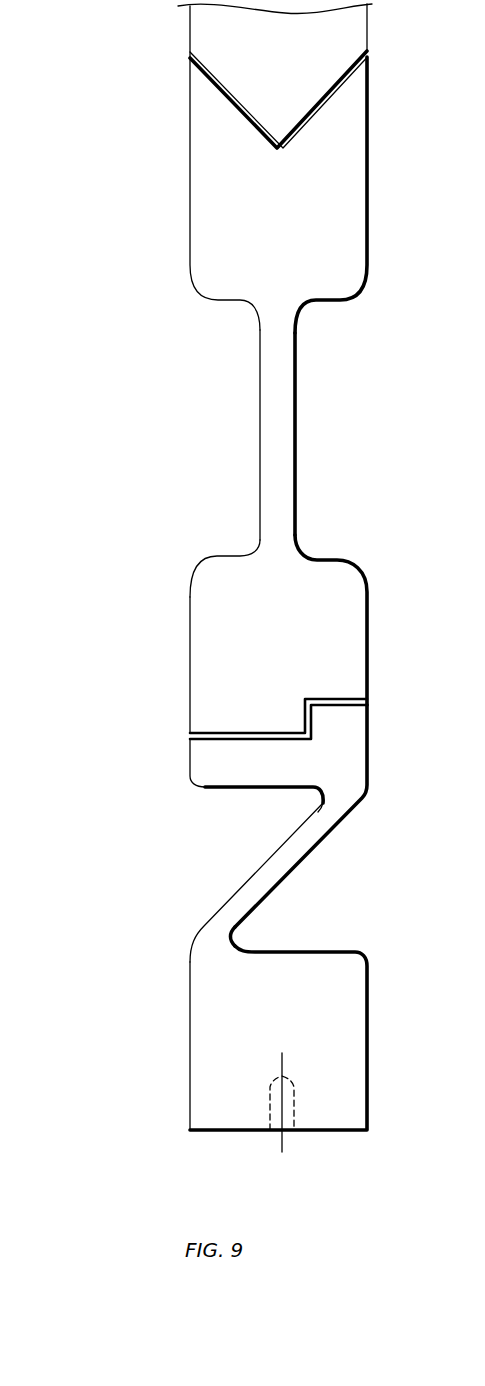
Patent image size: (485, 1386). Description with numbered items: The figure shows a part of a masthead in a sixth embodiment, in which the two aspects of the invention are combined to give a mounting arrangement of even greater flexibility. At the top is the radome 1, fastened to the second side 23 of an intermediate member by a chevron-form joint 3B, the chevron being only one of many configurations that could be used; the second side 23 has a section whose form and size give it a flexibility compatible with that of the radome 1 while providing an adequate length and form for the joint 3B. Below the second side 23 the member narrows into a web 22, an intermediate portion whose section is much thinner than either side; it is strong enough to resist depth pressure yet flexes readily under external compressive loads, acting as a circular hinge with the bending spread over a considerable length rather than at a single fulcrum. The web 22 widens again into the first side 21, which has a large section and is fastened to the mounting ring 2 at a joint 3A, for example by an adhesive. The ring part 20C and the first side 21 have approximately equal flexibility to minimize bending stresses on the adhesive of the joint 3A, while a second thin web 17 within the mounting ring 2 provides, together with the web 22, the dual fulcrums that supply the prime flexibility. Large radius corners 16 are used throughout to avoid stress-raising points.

The radome 1 is at (205, 40).
The joint 3B is at (219, 95).
The second side 23 is at (200, 177).
The web 22 is at (283, 404).
The large radius corners 16 is at (248, 544).
The first side 21 is at (202, 633).
The joint 3A is at (218, 733).
The ring part 20C is at (228, 765).
The web 17 is at (267, 868).
The mounting ring 2 is at (198, 1013).